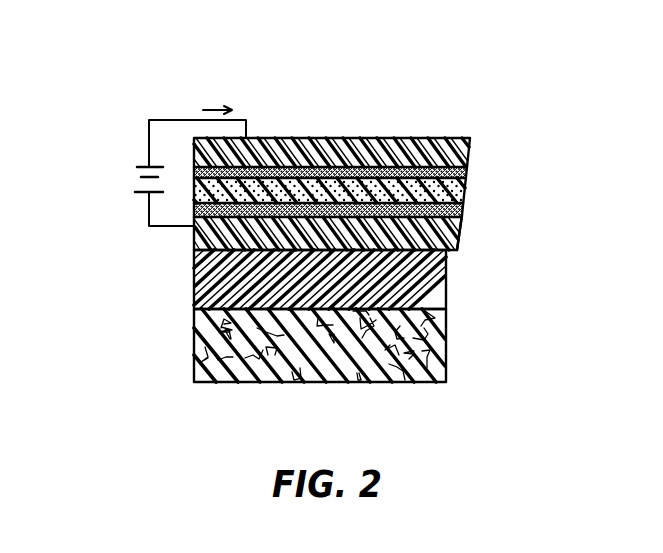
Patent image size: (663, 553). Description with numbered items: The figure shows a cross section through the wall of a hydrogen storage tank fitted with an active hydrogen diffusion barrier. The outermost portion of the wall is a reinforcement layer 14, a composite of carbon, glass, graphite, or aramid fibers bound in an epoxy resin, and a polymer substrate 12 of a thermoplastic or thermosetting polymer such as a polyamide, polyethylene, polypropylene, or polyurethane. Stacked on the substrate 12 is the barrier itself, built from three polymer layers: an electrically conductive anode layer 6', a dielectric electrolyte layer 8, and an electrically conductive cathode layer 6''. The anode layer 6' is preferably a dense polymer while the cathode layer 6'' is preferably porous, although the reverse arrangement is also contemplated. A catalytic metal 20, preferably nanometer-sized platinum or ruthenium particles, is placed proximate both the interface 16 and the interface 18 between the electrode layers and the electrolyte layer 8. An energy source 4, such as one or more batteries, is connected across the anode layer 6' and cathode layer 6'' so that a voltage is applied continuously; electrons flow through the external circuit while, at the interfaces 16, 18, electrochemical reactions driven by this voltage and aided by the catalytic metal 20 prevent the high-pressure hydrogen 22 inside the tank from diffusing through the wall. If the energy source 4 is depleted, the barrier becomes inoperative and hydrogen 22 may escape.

The energy source 4 is at (138, 168).
The electrolyte layer 8 is at (157, 226).
The polymer substrate 12 is at (194, 283).
The reinforcement layer 14 is at (194, 340).
The interface 16 is at (462, 220).
The interface 18 is at (468, 166).
The catalytic metal 20 is at (466, 212).
The high-pressure hydrogen 22 is at (303, 82).
The anode layer 6' is at (497, 260).
The cathode layer 6'' is at (354, 153).